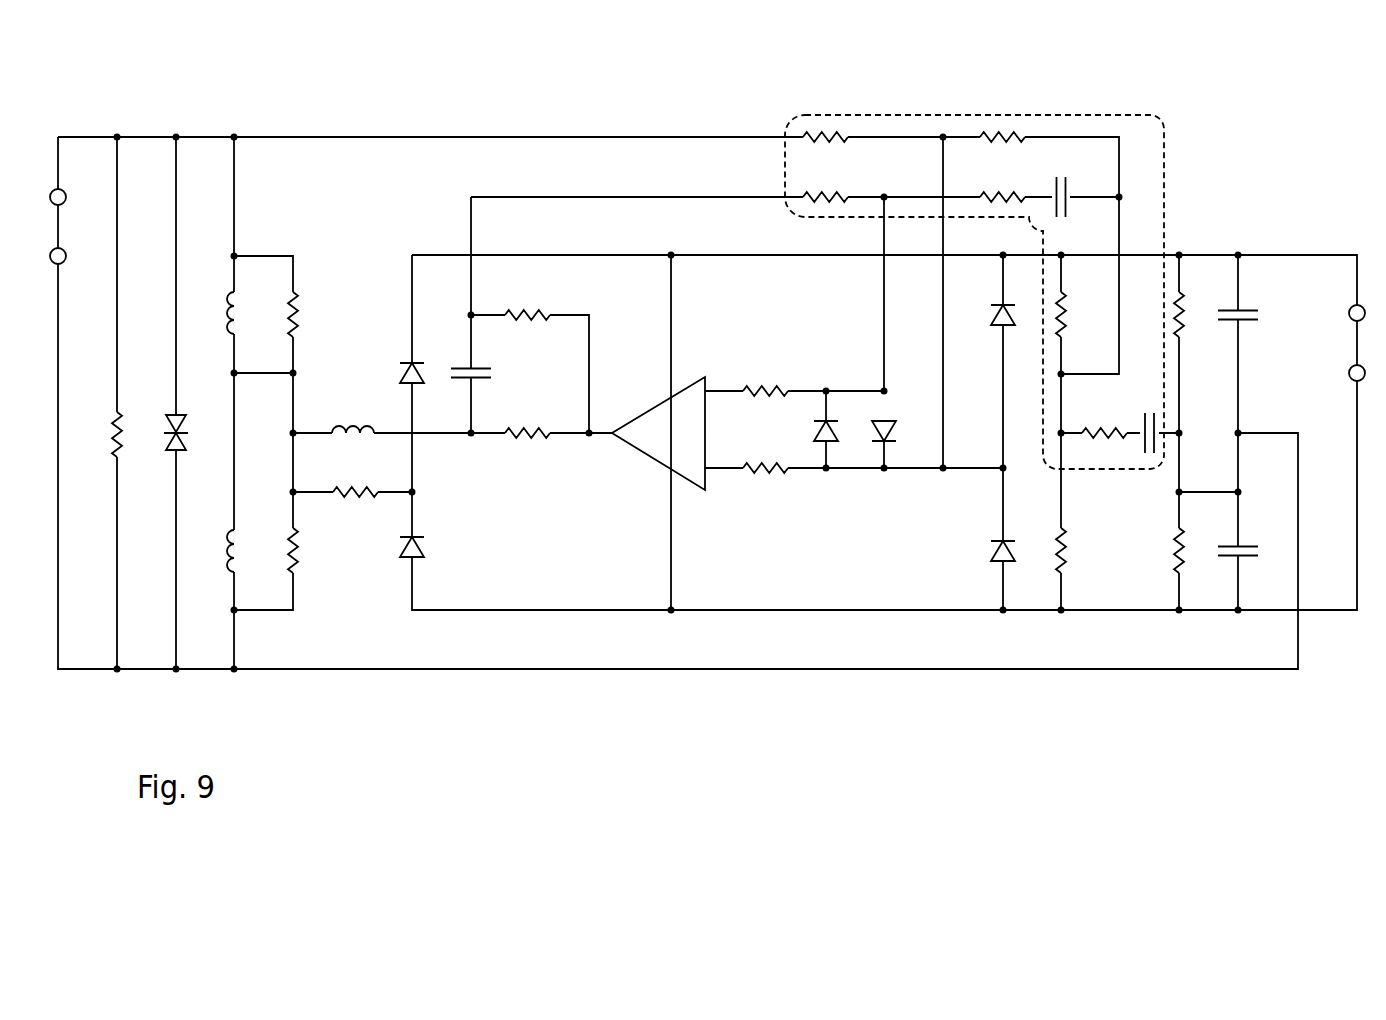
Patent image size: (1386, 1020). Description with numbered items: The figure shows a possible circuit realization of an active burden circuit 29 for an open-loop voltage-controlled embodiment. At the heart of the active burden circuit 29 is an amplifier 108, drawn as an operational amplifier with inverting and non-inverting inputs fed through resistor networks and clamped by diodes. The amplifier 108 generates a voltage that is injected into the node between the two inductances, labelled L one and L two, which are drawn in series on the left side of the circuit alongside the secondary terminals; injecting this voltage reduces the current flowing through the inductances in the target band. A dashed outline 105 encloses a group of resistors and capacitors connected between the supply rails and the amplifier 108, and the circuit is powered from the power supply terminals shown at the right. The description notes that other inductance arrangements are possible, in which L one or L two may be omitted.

The active burden circuit 29 is at (1252, 149).
The filter network 105 is at (1112, 125).
The amplifier 108 is at (706, 386).